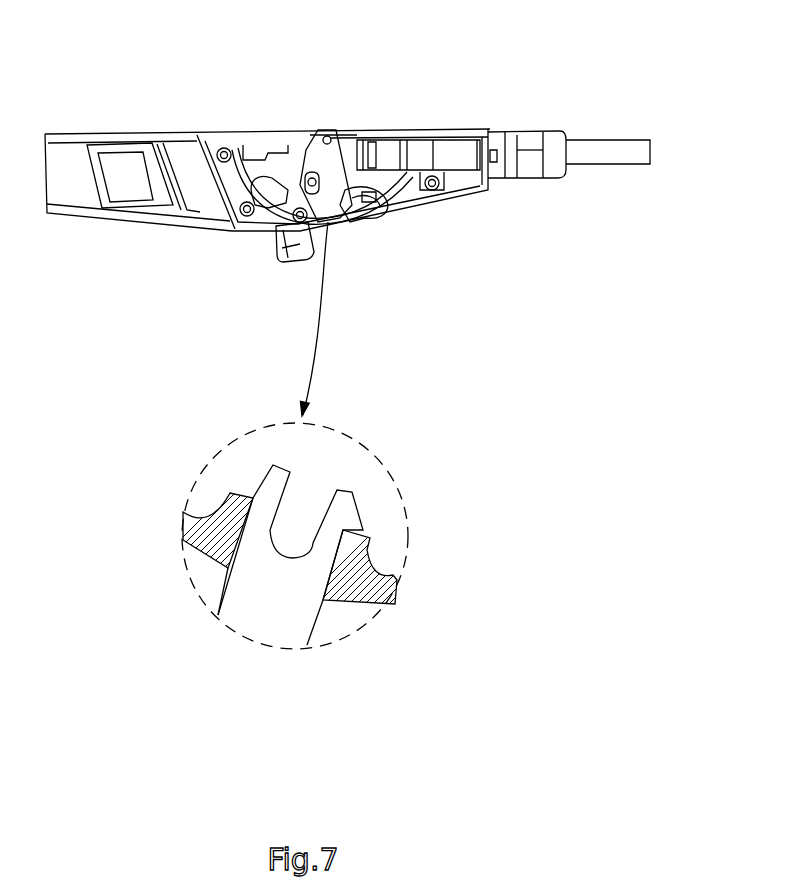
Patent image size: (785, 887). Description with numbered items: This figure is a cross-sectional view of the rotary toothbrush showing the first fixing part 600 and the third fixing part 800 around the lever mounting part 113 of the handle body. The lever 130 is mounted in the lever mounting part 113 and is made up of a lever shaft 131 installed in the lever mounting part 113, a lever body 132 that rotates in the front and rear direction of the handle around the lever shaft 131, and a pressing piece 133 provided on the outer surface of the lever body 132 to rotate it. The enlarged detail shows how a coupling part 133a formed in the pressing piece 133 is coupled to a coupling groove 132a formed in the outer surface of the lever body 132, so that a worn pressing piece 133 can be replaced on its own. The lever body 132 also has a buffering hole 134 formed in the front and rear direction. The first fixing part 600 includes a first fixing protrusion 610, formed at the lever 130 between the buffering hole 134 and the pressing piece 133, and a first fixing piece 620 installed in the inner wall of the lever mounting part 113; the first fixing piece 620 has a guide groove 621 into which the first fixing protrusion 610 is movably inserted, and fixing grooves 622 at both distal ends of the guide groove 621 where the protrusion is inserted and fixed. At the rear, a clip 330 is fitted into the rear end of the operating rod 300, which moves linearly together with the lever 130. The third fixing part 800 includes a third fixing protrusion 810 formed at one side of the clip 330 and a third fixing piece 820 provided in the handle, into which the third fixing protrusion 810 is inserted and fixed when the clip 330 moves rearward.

The lever mounting part 113 is at (180, 228).
The lever 130 is at (350, 46).
The lever shaft 131 is at (328, 137).
The lever body 132 is at (283, 172).
The coupling groove 132a is at (316, 605).
The pressing piece 133 is at (263, 168).
The coupling part 133a is at (350, 508).
The buffering hole 134 is at (385, 212).
The operating rod 300 is at (600, 142).
The clip 330 is at (427, 140).
The first fixing part 600 is at (347, 310).
The first fixing protrusion 610 is at (306, 224).
The first fixing piece 620 is at (350, 220).
The guide groove 621 is at (372, 148).
The fixing grooves 622 is at (380, 197).
The third fixing part 800 is at (128, 46).
The third fixing protrusion 810 is at (226, 148).
The third fixing piece 820 is at (252, 160).